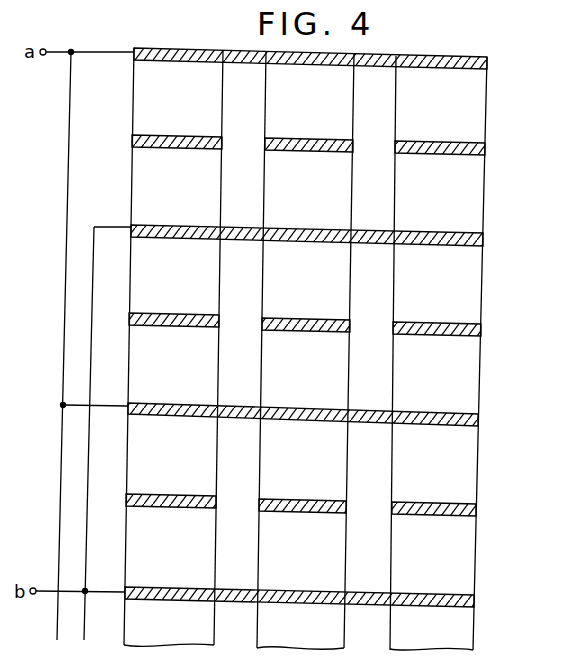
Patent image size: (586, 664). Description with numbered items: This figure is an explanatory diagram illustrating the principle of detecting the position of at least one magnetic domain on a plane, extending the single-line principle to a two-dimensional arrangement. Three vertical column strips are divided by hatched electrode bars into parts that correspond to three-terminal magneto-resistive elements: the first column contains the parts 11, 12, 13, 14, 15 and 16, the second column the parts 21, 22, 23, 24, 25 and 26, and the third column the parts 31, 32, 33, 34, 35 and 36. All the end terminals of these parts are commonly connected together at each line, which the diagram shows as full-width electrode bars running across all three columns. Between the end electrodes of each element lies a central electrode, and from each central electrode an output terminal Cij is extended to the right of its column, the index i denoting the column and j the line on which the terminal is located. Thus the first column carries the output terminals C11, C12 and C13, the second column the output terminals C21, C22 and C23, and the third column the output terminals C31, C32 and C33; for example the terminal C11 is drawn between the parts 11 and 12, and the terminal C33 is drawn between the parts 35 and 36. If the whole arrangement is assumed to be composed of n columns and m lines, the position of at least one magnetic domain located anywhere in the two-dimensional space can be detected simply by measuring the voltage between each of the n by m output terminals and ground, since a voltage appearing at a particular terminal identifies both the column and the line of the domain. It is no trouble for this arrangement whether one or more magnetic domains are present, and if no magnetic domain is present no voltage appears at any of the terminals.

The matrix element 11 is at (178, 97).
The matrix element 12 is at (176, 186).
The matrix element 13 is at (175, 275).
The matrix element 14 is at (173, 364).
The matrix element 15 is at (172, 454).
The matrix element 16 is at (170, 546).
The matrix element 21 is at (310, 100).
The matrix element 22 is at (309, 189).
The matrix element 23 is at (307, 279).
The matrix element 24 is at (306, 369).
The matrix element 25 is at (304, 459).
The matrix element 26 is at (303, 551).
The matrix element 31 is at (441, 104).
The matrix element 32 is at (440, 193).
The matrix element 33 is at (438, 284).
The matrix element 34 is at (437, 374).
The matrix element 35 is at (435, 464).
The matrix element 36 is at (433, 555).
The output terminal C11 is at (240, 143).
The output terminal C21 is at (373, 146).
The output terminal C31 is at (505, 148).
The output terminal C12 is at (236, 322).
The output terminal C22 is at (368, 326).
The output terminal C32 is at (501, 329).
The output terminal C13 is at (233, 502).
The output terminal C23 is at (364, 506).
The output terminal C33 is at (497, 509).